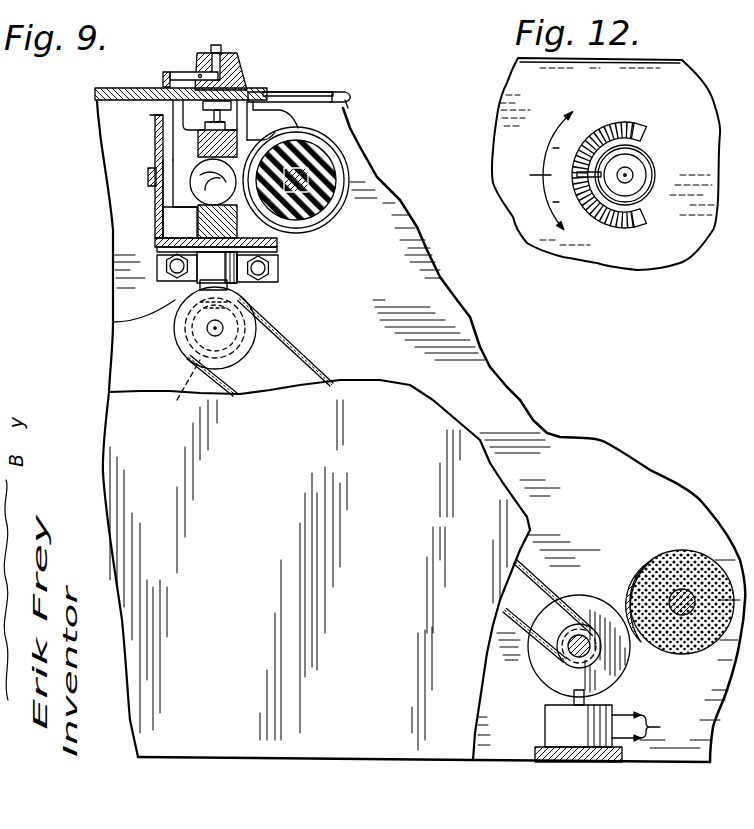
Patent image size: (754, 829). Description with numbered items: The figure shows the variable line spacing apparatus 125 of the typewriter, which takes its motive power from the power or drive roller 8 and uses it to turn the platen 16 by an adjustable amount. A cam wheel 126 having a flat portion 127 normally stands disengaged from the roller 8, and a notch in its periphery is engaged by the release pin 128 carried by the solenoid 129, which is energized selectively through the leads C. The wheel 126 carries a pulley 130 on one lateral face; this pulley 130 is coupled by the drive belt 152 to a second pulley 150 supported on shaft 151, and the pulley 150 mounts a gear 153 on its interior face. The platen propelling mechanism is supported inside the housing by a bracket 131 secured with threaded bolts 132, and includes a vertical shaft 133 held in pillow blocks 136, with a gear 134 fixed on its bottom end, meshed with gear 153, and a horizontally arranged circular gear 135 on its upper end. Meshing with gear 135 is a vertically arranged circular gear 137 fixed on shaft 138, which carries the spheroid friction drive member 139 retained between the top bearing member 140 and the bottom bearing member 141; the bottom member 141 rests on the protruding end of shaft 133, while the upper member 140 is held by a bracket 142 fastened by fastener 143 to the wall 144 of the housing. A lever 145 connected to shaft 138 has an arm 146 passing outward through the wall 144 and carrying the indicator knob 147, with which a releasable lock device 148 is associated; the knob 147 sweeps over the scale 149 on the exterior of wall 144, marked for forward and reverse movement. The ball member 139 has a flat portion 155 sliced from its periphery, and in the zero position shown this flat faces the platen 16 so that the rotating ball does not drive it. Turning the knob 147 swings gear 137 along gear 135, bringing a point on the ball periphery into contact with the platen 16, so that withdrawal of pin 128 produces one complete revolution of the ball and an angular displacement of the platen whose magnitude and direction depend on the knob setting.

In FIG. 9, the power or drive roller 8 is at (685, 560).
In FIG. 9, the platen 16 is at (336, 214).
In FIG. 9, the variable line spacing apparatus 125 is at (155, 220).
In FIG. 9, the cam wheel 126 is at (620, 680).
In FIG. 9, the flat portion 127 is at (616, 645).
In FIG. 9, the release pin 128 is at (565, 699).
In FIG. 9, the solenoid 129 is at (548, 736).
In FIG. 9, the pulley 130 is at (150, 132).
In FIG. 9, the bracket 131 is at (238, 270).
In FIG. 9, the threaded bolts 132 is at (281, 270).
In FIG. 9, the vertical shaft 133 is at (226, 290).
In FIG. 9, the gear 134 is at (172, 333).
In FIG. 9, the horizontally arranged circular gear 135 is at (272, 250).
In FIG. 9, the pillow blocks 136 is at (114, 322).
In FIG. 9, the vertically arranged circular gear 137 is at (154, 152).
In FIG. 9, the shaft 138 is at (153, 205).
In FIG. 9, the friction drive member 139 is at (216, 188).
In FIG. 9, the top bearing member 140 is at (352, 118).
In FIG. 9, the bottom bearing member 141 is at (180, 222).
In FIG. 9, the bracket 142 is at (270, 100).
In FIG. 9, the fastener 143 is at (334, 97).
In FIG. 9, the wall 144 is at (295, 92).
In FIG. 12, the wall 144 is at (606, 164).
In FIG. 9, the lever 145 is at (172, 128).
In FIG. 9, the arm 146 is at (225, 115).
In FIG. 9, the indicator knob 147 is at (240, 62).
In FIG. 12, the indicator knob 147 is at (637, 166).
In FIG. 9, the releasable lock device 148 is at (224, 31).
In FIG. 12, the scale 149 is at (551, 206).
In FIG. 9, the pulley 150 is at (376, 508).
In FIG. 9, the shaft 151 is at (208, 332).
In FIG. 9, the drive belt 152 is at (300, 353).
In FIG. 9, the gear 153 is at (182, 399).
In FIG. 9, the flat portion 155 is at (195, 176).
In FIG. 9, the leads C is at (645, 726).